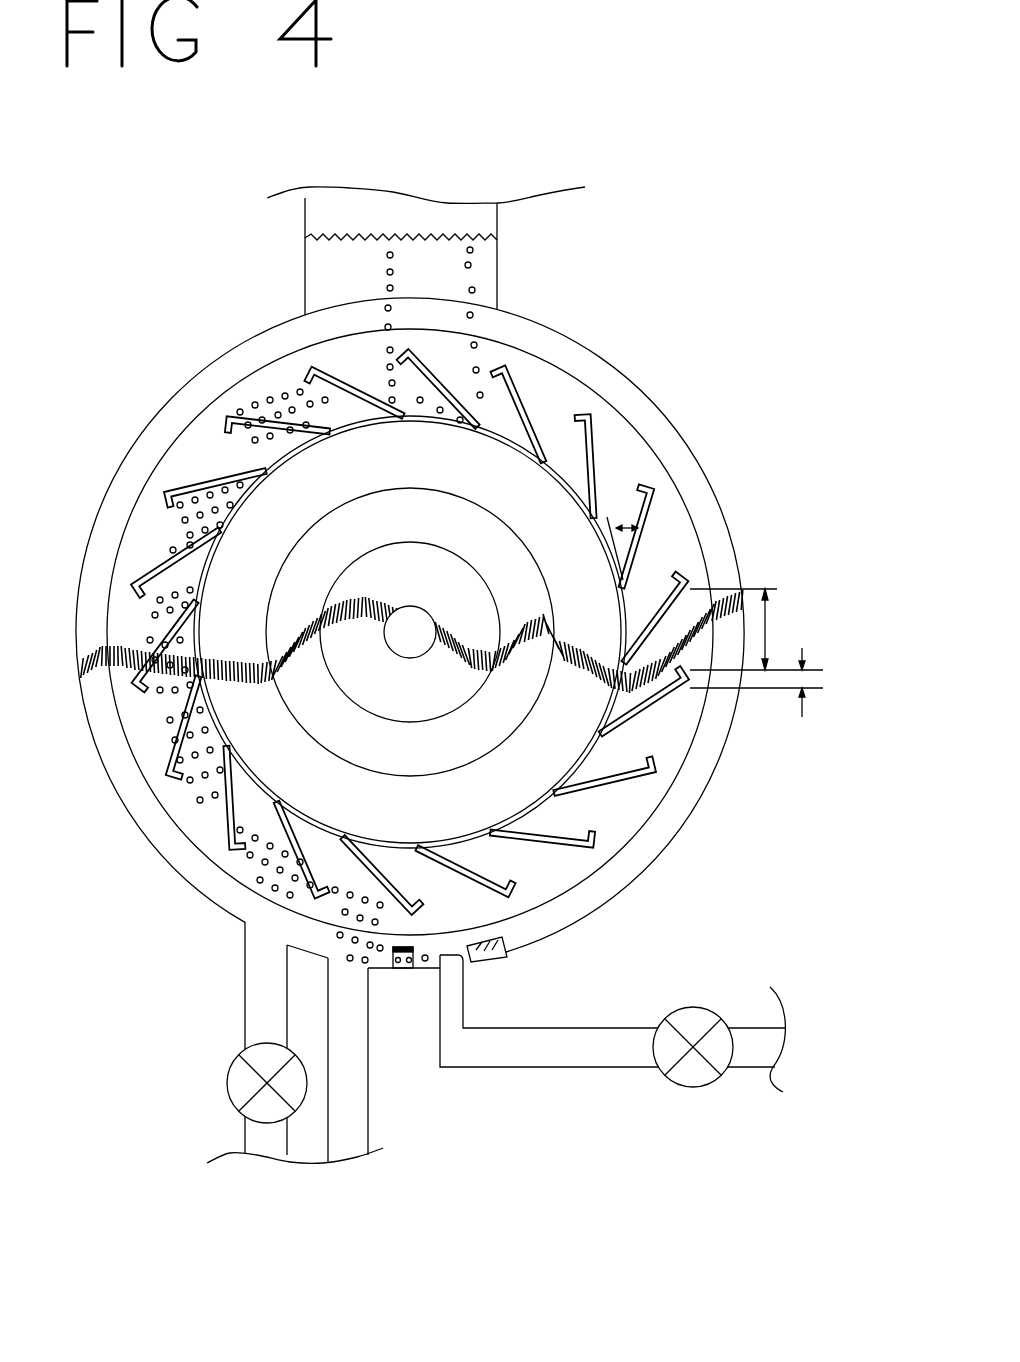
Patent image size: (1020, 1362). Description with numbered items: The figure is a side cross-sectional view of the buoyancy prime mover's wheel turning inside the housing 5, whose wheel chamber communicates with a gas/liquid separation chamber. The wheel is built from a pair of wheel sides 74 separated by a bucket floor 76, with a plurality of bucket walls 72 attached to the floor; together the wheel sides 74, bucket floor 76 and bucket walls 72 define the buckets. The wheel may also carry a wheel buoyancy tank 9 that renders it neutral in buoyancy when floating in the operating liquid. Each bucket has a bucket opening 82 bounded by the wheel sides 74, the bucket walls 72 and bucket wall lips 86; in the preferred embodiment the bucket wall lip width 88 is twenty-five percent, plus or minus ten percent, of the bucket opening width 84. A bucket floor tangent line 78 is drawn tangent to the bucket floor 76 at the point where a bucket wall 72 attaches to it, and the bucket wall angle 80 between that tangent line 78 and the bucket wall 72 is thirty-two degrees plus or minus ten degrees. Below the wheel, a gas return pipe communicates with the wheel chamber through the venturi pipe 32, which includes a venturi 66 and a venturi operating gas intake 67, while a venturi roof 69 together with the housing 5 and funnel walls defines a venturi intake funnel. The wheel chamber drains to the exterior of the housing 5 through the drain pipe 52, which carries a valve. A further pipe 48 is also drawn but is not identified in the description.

The housing 5 is at (231, 346).
The wheel buoyancy tank 9 is at (556, 597).
The venturi pipe 32 is at (565, 1072).
The discharge pipe 48 is at (368, 1097).
The drain pipe 52 is at (243, 968).
The venturi 66 is at (507, 950).
The venturi operating gas intake 67 is at (437, 970).
The venturi roof 69 is at (437, 960).
The bucket walls 72 is at (523, 393).
The wheel sides 74 is at (137, 733).
The bucket floor 76 is at (195, 580).
The bucket floor tangent line 78 is at (632, 610).
The bucket wall angle 80 is at (625, 522).
The bucket openings 82 is at (210, 453).
The bucket opening width 84 is at (767, 628).
The bucket wall lips 86 is at (657, 778).
The bucket wall lip width 88 is at (803, 708).